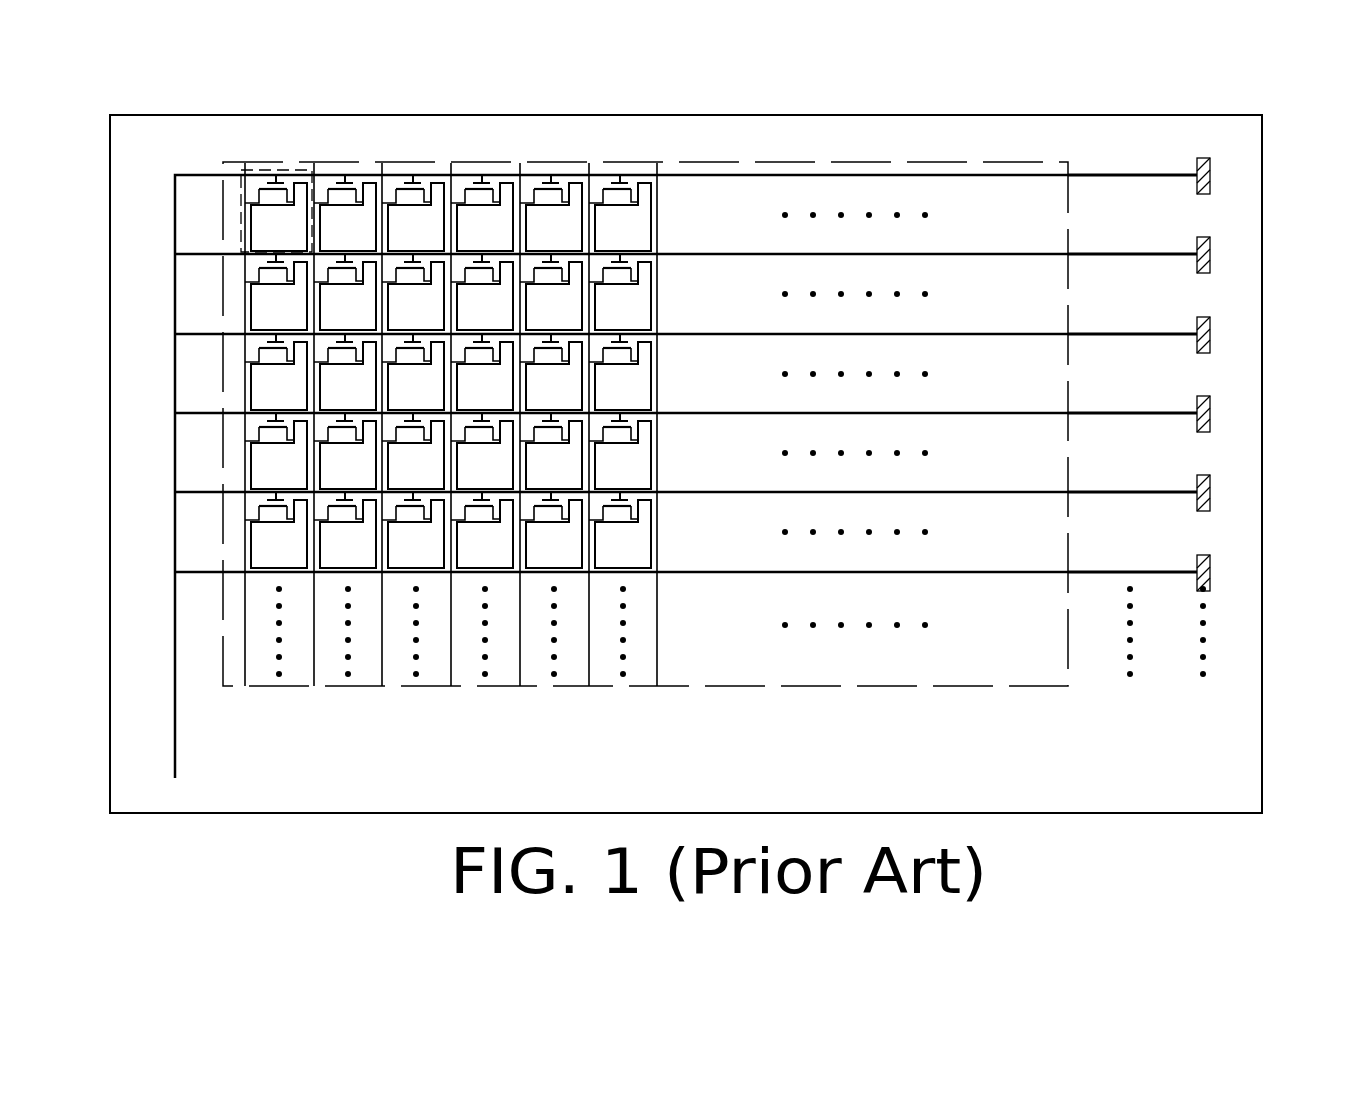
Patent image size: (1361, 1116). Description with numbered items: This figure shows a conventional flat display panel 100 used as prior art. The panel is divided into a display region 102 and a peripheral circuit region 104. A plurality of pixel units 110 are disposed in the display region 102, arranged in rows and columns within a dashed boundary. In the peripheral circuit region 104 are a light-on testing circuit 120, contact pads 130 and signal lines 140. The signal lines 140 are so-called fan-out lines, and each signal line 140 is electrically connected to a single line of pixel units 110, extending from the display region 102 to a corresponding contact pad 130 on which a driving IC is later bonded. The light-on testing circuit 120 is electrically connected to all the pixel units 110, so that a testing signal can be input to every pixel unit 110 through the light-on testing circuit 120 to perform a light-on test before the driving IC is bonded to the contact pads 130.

The flat display panel 100 is at (1358, 783).
The display region 102 is at (710, 160).
The peripheral circuit region 104 is at (408, 130).
The pixel unit 110 is at (243, 222).
The light-on testing circuit 120 is at (173, 360).
The contact pads 130 is at (1212, 166).
The signal lines 140 is at (1132, 175).